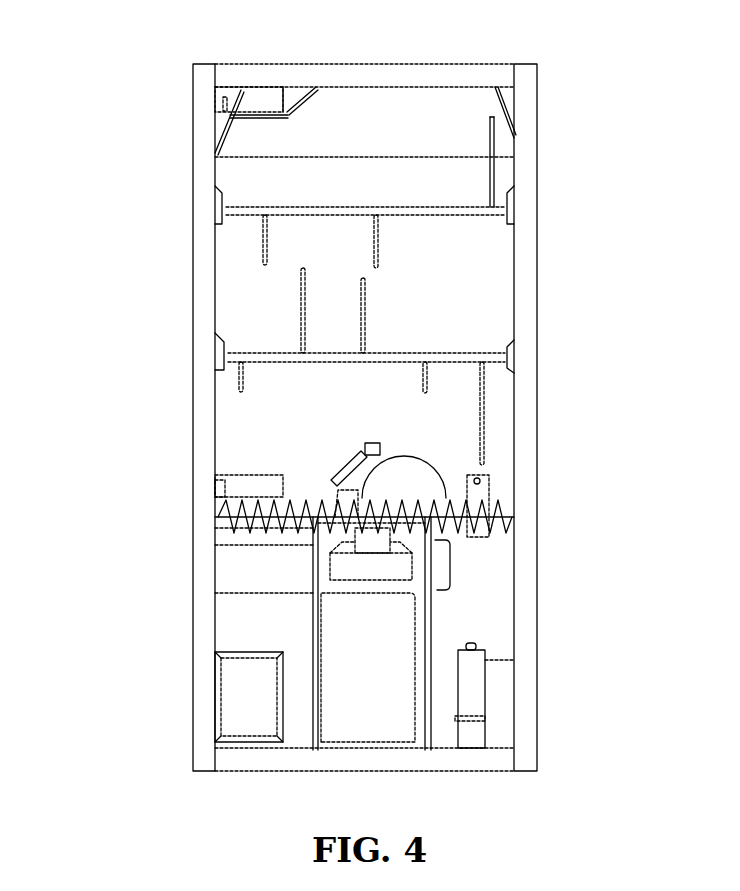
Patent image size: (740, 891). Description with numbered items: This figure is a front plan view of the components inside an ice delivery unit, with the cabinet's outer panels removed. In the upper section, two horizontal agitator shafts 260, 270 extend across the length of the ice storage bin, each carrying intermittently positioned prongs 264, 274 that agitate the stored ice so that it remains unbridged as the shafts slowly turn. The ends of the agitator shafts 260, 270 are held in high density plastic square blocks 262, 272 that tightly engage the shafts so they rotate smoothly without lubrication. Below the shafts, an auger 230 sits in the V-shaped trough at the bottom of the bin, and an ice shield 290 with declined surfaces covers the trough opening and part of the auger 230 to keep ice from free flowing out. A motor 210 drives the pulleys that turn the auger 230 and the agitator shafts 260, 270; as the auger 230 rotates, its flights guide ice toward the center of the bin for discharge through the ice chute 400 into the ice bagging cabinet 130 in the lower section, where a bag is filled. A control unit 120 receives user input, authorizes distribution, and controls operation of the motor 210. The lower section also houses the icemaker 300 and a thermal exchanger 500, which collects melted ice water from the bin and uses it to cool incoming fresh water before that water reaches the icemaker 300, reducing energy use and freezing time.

The control unit 120 is at (492, 497).
The ice bagging cabinet 130 is at (382, 716).
The motor 210 is at (245, 95).
The auger 230 is at (252, 497).
The agitator shaft 260 is at (275, 350).
The high density plastic square block 262 is at (515, 348).
The prong 264 is at (370, 318).
The agitator shaft 270 is at (410, 207).
The high density plastic square block 272 is at (222, 207).
The prong 274 is at (374, 237).
The ice shield 290 is at (335, 468).
The icemaker 300 is at (258, 683).
The ice chute 400 is at (370, 540).
The thermal exchanger 500 is at (495, 698).